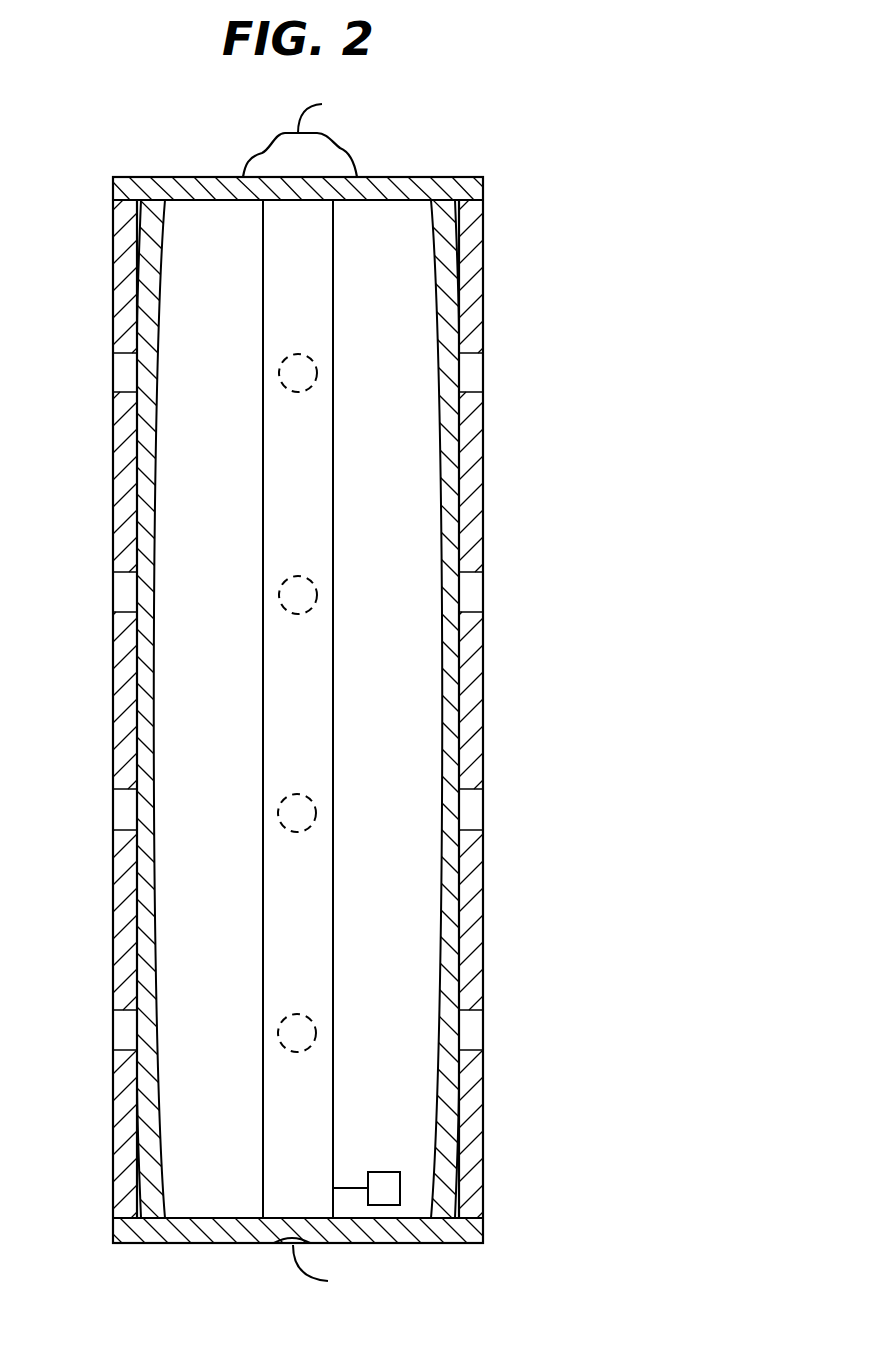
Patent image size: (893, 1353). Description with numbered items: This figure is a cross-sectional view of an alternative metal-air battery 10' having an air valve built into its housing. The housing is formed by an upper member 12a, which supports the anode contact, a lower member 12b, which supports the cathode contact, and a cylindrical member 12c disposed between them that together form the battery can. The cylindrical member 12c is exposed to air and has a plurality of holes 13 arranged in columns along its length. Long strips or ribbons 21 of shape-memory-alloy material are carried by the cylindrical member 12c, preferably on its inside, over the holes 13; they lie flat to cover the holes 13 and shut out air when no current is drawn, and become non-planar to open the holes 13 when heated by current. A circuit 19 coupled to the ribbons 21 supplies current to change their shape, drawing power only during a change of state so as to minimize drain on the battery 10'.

The battery 10' is at (267, 646).
The upper member 12a is at (452, 177).
The lower member 12b is at (184, 1245).
The cylindrical member 12c is at (484, 283).
The ribbons 21 is at (263, 300).
The holes 13 is at (317, 378).
The circuit 19 is at (384, 1172).